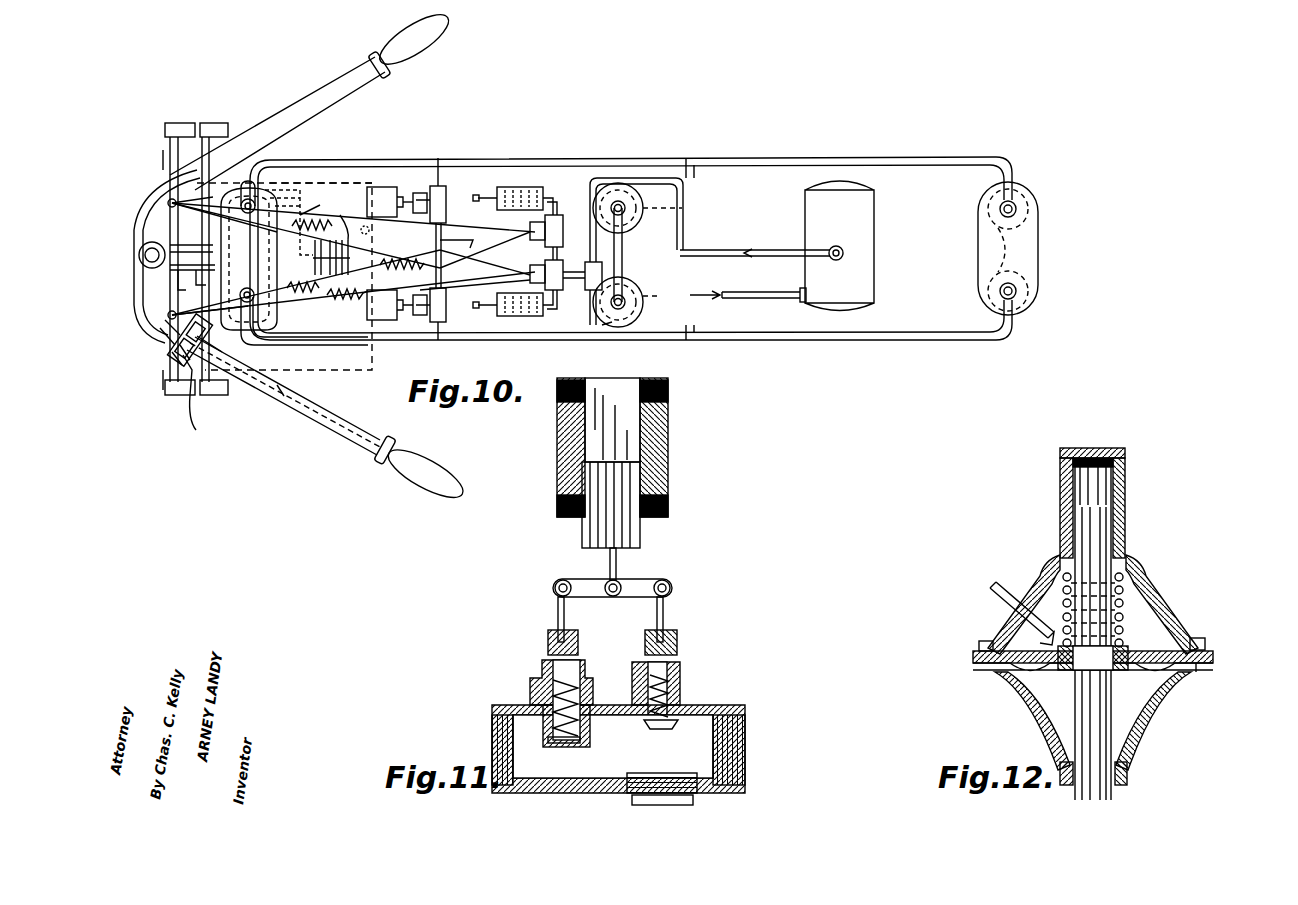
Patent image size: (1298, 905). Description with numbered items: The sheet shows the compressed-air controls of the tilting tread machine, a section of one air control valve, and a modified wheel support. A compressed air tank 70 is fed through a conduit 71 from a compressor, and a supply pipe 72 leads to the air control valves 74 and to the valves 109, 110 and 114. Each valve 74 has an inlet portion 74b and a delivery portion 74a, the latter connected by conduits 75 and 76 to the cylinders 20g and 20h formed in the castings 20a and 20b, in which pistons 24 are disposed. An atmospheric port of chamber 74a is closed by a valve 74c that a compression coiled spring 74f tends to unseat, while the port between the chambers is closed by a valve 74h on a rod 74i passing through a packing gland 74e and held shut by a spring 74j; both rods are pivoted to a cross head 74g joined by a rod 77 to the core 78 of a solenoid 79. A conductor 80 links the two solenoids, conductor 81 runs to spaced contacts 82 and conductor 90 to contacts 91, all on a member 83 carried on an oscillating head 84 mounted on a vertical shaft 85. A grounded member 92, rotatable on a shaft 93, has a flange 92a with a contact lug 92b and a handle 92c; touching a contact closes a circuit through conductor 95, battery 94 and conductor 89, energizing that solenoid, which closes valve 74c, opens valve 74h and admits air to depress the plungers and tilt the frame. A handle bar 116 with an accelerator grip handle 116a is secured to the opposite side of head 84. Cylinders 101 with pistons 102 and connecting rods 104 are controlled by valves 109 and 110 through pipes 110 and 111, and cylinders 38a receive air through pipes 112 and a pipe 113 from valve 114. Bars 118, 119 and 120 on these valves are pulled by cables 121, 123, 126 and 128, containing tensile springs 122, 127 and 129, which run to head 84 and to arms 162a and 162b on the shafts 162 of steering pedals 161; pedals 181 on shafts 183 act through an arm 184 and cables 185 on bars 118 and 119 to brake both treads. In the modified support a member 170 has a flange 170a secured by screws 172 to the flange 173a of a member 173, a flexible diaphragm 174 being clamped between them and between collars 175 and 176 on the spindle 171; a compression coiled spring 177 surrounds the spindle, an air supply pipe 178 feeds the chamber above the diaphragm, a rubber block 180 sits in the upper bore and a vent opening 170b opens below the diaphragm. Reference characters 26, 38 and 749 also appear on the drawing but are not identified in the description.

In FIG. 10, the casting 20a is at (1042, 250).
In FIG. 10, the cylinder 20g is at (1006, 250).
In FIG. 10, the cylinder 20h is at (249, 259).
In FIG. 10, the casting 20b is at (275, 316).
In FIG. 10, the piston 24 is at (289, 220).
In FIG. 10, the connection 26 is at (317, 203).
In FIG. 10, the cylinder 38 is at (636, 200).
In FIG. 10, the cylinder 38a is at (679, 247).
In FIG. 10, the compressed air tank 70 is at (866, 262).
In FIG. 10, the conduit 71 is at (730, 294).
In FIG. 10, the supply pipe 72 is at (690, 253).
In FIG. 10, the air control valve 74 is at (447, 205).
In FIG. 11, the air control valve 74 is at (728, 686).
In FIG. 10, the valve lever 749 is at (430, 188).
In FIG. 11, the cross head 74g is at (626, 580).
In FIG. 10, the conduit 75 is at (648, 341).
In FIG. 10, the conduit 76 is at (652, 168).
In FIG. 11, the rod 77 is at (610, 561).
In FIG. 11, the core 78 is at (640, 532).
In FIG. 10, the solenoid 79 is at (381, 190).
In FIG. 11, the solenoid 79 is at (668, 425).
In FIG. 10, the conductor 80 is at (380, 236).
In FIG. 10, the conductor 81 is at (295, 196).
In FIG. 10, the contact 82 is at (204, 330).
In FIG. 10, the member 83 is at (168, 350).
In FIG. 10, the oscillating head 84 is at (148, 290).
In FIG. 10, the vertical shaft 85 is at (153, 245).
In FIG. 10, the conductor 89 is at (351, 219).
In FIG. 10, the conductor 90 is at (312, 370).
In FIG. 10, the contact 91 is at (175, 362).
In FIG. 10, the member 92 is at (346, 442).
In FIG. 10, the flange 92a is at (195, 430).
In FIG. 10, the contact lug 92b is at (232, 355).
In FIG. 10, the handle 92c is at (410, 476).
In FIG. 10, the shaft 93 is at (278, 408).
In FIG. 10, the battery 94 is at (313, 258).
In FIG. 10, the conductor 95 is at (322, 232).
In FIG. 10, the cylinder 101 is at (520, 190).
In FIG. 10, the piston 102 is at (520, 314).
In FIG. 10, the connecting rod 104 is at (480, 197).
In FIG. 10, the valve 109 is at (562, 228).
In FIG. 10, the valve 110 is at (569, 252).
In FIG. 10, the pipe 111 is at (578, 313).
In FIG. 10, the pipe 112 is at (635, 255).
In FIG. 10, the pipe 113 is at (623, 234).
In FIG. 10, the control valve 114 is at (602, 328).
In FIG. 10, the handle bar 116 is at (275, 122).
In FIG. 10, the grip handle 116a is at (400, 55).
In FIG. 10, the bar 118 is at (485, 250).
In FIG. 10, the bar 119 is at (485, 262).
In FIG. 10, the bar 120 is at (519, 268).
In FIG. 10, the cable 121 is at (316, 271).
In FIG. 10, the tensile coiled spring 122 is at (307, 280).
In FIG. 10, the cable 123 is at (353, 226).
In FIG. 10, the cable 126 is at (475, 287).
In FIG. 10, the tensile coiled spring 127 is at (346, 300).
In FIG. 10, the cable 128 is at (252, 186).
In FIG. 10, the tensile coiled spring 129 is at (353, 280).
In FIG. 10, the oscillating pedal 161 is at (222, 123).
In FIG. 10, the shaft 162 is at (207, 400).
In FIG. 10, the arm 162a is at (172, 199).
In FIG. 10, the arm 162b is at (168, 315).
In FIG. 12, the member 170 is at (1140, 705).
In FIG. 12, the flange 170a is at (1210, 665).
In FIG. 12, the vent opening 170b is at (1060, 770).
In FIG. 12, the spindle 171 is at (1112, 742).
In FIG. 12, the screw 172 is at (985, 641).
In FIG. 12, the member 173 is at (1135, 572).
In FIG. 12, the flange 173a is at (1205, 645).
In FIG. 12, the flexible diaphragm 174 is at (1000, 670).
In FIG. 12, the collar 175 is at (1060, 674).
In FIG. 12, the collar 176 is at (1126, 650).
In FIG. 12, the compression coiled spring 177 is at (1125, 620).
In FIG. 12, the air supply pipe 178 is at (1010, 568).
In FIG. 12, the resilient block 180 is at (1113, 468).
In FIG. 10, the oscillating pedal 181 is at (196, 114).
In FIG. 10, the shaft 183 is at (168, 152).
In FIG. 10, the arm 184 is at (139, 263).
In FIG. 10, the cable 185 is at (455, 262).
In FIG. 11, the delivery portion 74a is at (735, 740).
In FIG. 11, the inlet portion 74b is at (500, 742).
In FIG. 11, the valve 74c is at (660, 730).
In FIG. 11, the packing gland 74e is at (578, 632).
In FIG. 11, the compression coiled spring 74f is at (668, 680).
In FIG. 11, the valve 74h is at (554, 745).
In FIG. 11, the rod 74i is at (556, 606).
In FIG. 11, the compression coiled spring 74j is at (578, 724).